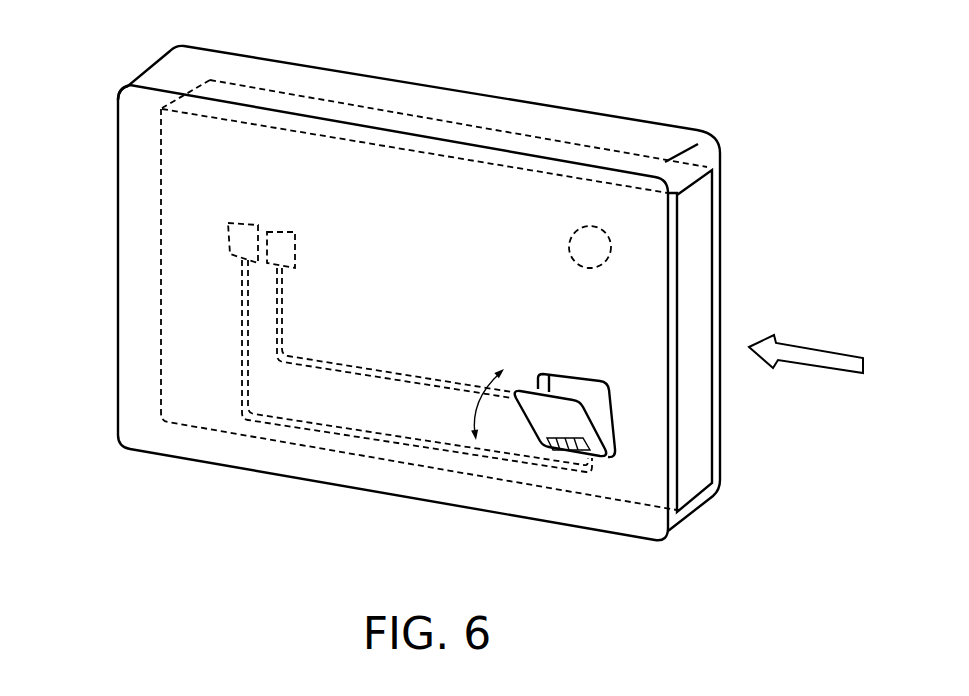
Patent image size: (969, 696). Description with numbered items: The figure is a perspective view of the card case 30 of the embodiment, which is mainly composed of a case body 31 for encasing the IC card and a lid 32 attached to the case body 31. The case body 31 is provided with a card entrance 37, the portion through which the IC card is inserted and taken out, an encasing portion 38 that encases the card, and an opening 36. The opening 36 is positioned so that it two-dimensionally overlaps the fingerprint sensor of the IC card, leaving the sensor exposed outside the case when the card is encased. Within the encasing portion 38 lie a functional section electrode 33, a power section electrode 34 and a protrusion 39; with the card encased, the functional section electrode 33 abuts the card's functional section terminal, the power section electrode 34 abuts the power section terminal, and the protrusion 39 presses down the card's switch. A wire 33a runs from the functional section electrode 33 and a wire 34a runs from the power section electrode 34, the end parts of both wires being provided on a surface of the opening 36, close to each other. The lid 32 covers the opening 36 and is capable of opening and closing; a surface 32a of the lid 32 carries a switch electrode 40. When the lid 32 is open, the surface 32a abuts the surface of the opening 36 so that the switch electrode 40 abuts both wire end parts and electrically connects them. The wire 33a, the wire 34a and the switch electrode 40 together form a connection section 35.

The card case 30 is at (746, 120).
The case body 31 is at (392, 92).
The lid 32 is at (615, 440).
The surface of the lid 32a is at (578, 438).
The functional section electrode 33 is at (233, 253).
The wire 33a is at (327, 438).
The power section electrode 34 is at (267, 233).
The wire 34a is at (448, 385).
The connection section 35 is at (254, 446).
The opening 36 is at (605, 397).
The card entrance 37 is at (693, 220).
The encasing portion 38 is at (624, 203).
The protrusion 39 is at (587, 237).
The switch electrode 40 is at (572, 452).